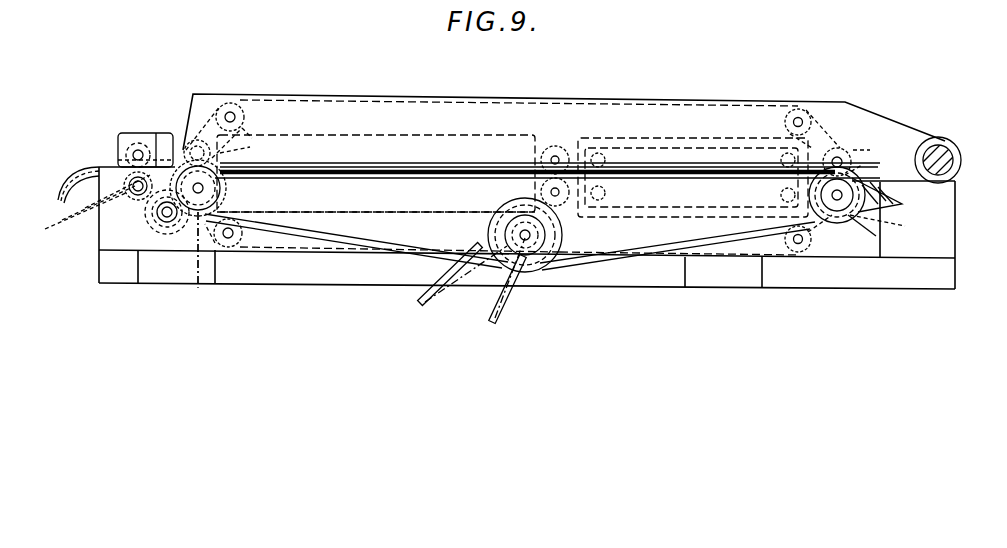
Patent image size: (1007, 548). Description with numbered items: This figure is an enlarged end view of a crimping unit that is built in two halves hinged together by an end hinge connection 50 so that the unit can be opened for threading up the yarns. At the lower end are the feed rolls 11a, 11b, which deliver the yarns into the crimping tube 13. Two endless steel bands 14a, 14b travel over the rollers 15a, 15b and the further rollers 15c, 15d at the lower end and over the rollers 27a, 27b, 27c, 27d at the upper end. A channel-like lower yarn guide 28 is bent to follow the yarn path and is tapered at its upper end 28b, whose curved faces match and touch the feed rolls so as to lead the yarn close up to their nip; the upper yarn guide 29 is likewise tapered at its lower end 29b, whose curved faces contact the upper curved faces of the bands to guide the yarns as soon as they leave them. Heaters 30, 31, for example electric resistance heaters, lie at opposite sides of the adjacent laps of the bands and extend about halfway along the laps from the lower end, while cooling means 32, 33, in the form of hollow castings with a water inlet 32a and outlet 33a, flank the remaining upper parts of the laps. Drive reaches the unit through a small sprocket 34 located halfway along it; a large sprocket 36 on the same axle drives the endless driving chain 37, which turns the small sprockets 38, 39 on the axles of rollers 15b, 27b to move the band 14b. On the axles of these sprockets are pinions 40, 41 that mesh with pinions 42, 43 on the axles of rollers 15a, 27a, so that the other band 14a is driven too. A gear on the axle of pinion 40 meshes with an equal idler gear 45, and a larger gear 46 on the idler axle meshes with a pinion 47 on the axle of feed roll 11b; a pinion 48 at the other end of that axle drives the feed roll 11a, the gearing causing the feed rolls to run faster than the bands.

The feed roll 11a is at (119, 144).
The feed roll 11b is at (80, 221).
The crimping tube 13 is at (153, 152).
The endless band 14a is at (312, 103).
The endless band 14b is at (322, 249).
The roller 15a is at (263, 123).
The roller 15b is at (199, 259).
The roller 15c is at (247, 103).
The roller 15d is at (238, 247).
The roller 27a is at (882, 150).
The roller 27b is at (895, 215).
The roller 27c is at (815, 98).
The roller 27d is at (804, 251).
The lower yarn guide 28 is at (62, 185).
The upper end of lower guide 28b is at (95, 205).
The upper yarn guide 29 is at (897, 201).
The lower end of upper guide 29b is at (874, 164).
The heater 30 is at (478, 135).
The heater 31 is at (406, 213).
The cooling means 32 is at (705, 140).
The inlet 32a is at (604, 166).
The cooling means 33 is at (665, 218).
The outlet 33a is at (790, 165).
The small sprocket 34 is at (521, 248).
The large sprocket 36 is at (543, 262).
The endless driving chain 37 is at (590, 264).
The small sprocket 38 is at (226, 191).
The small sprocket 39 is at (881, 231).
The pinion 40 is at (232, 204).
The pinion 41 is at (844, 201).
The pinion 42 is at (248, 149).
The pinion 43 is at (832, 134).
The idler gear 45 is at (175, 232).
The larger gear 46 is at (160, 232).
The pinion 47 is at (110, 212).
The pinion 48 is at (131, 203).
The end hinge connection 50 is at (958, 159).